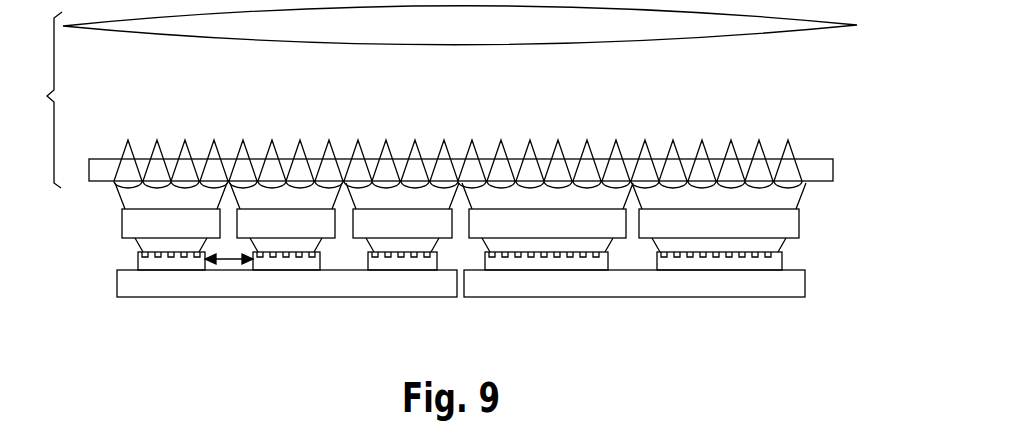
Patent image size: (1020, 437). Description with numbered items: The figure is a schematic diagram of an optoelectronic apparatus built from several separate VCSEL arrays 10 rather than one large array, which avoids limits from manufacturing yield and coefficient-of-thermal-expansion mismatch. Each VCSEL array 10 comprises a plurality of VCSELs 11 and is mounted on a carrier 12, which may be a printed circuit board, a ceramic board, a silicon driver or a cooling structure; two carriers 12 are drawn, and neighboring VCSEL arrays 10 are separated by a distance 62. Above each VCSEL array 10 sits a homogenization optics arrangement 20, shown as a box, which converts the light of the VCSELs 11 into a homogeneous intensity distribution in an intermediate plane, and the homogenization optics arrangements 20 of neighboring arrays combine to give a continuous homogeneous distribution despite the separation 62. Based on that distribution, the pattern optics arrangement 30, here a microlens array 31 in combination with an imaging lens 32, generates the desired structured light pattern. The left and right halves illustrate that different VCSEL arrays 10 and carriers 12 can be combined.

The pattern optics arrangement 30 is at (40, 100).
The imaging lens 32 is at (857, 25).
The microlens array 31 is at (833, 170).
The homogenization optics arrangement 20 is at (185, 234).
The VCSEL array 10 is at (461, 305).
The VCSEL 11 is at (174, 256).
The carrier 12 is at (298, 284).
The distance 62 is at (232, 262).